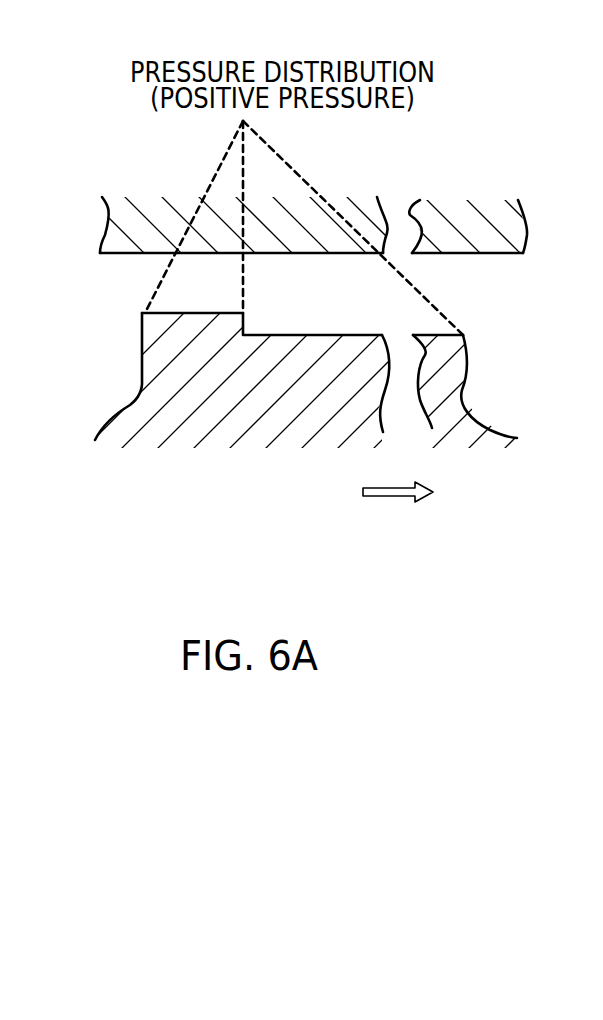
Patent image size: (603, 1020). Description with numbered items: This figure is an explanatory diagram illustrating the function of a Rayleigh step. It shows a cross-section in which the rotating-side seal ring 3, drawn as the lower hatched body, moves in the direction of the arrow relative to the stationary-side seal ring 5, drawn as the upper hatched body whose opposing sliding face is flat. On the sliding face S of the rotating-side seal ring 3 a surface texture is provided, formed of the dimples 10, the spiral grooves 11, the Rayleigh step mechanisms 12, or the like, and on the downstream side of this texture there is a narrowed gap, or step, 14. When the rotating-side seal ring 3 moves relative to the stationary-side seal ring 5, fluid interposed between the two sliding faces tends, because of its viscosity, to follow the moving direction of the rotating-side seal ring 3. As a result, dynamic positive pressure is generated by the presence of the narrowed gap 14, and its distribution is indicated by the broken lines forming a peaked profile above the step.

The rotating-side seal ring 3 is at (252, 445).
The stationary-side seal ring 5 is at (142, 205).
The sliding face S is at (190, 313).
The narrowed gap (step) 14 is at (244, 328).
The dimples 10 is at (380, 312).
The spiral grooves 11 is at (454, 233).
The Rayleigh step mechanisms 12 is at (454, 233).